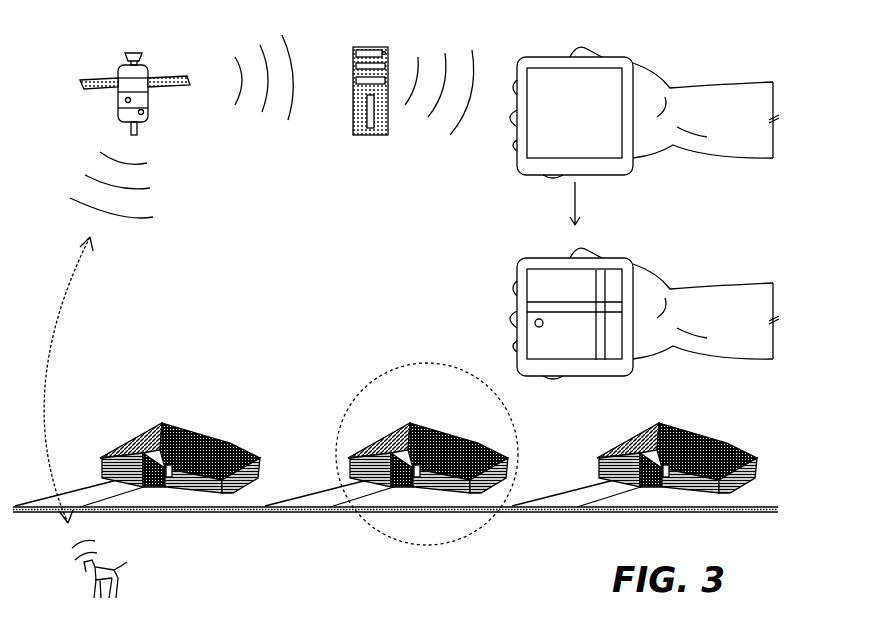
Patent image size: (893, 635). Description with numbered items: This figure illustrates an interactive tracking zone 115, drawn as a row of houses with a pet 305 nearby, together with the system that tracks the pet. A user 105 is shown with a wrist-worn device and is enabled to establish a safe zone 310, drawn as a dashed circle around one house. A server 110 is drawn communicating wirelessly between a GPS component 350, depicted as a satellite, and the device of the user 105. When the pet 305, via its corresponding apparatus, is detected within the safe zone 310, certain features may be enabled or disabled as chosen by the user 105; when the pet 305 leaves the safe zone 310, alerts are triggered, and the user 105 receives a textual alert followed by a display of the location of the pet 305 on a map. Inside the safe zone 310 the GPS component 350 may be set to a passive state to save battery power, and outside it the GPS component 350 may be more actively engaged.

The user 105 is at (644, 213).
The server 110 is at (413, 75).
The interactive tracking zone 115 is at (428, 442).
The pet 305 is at (102, 588).
The safe zone 310 is at (355, 400).
The GPS component 350 is at (181, 126).